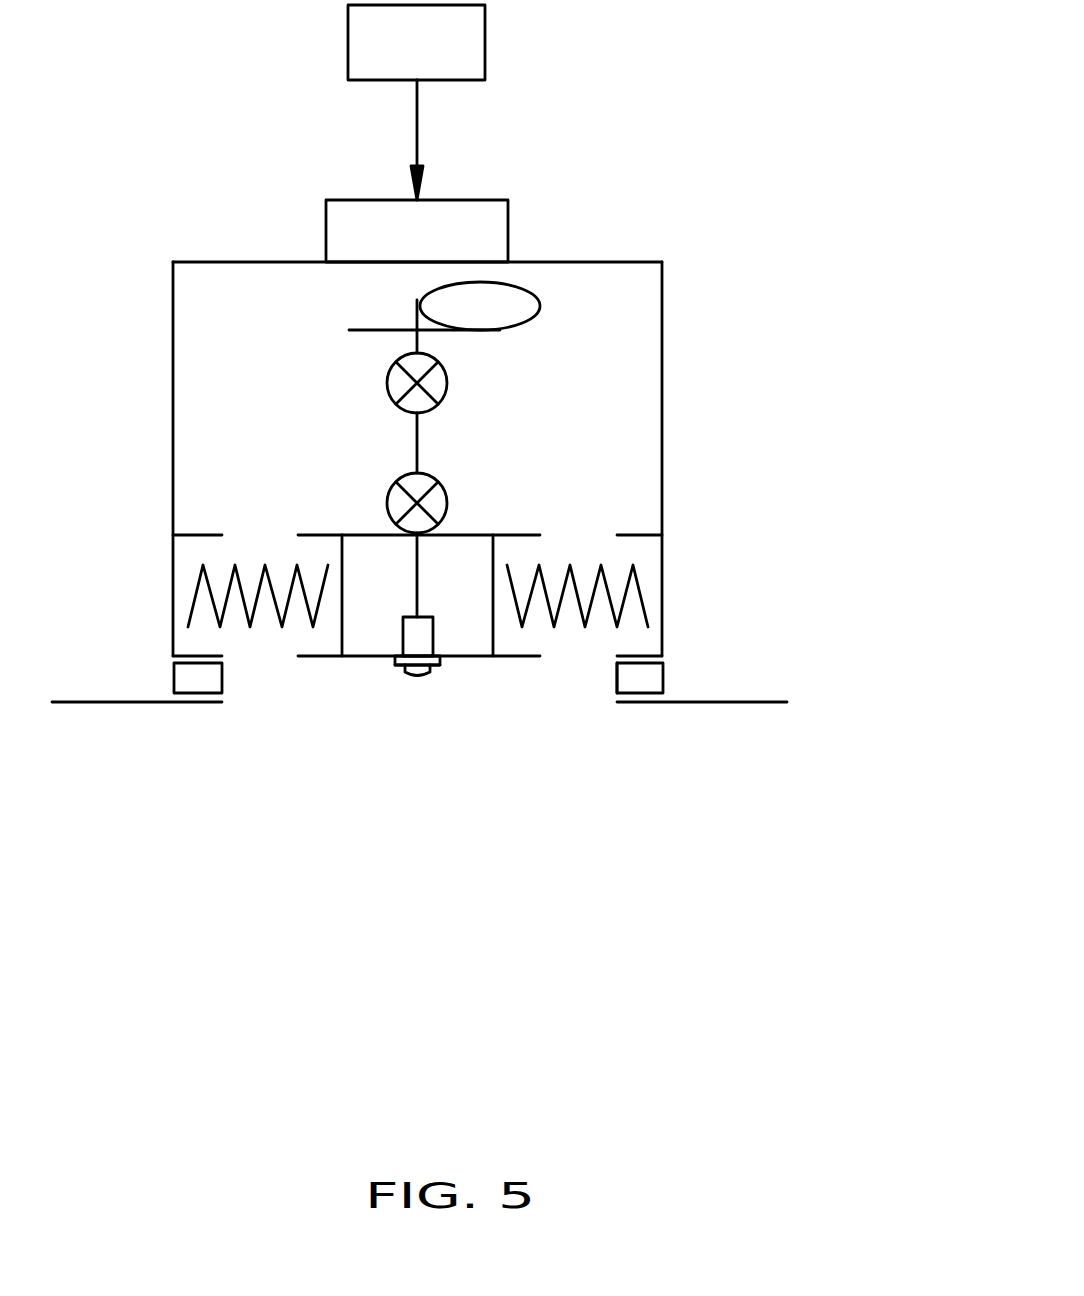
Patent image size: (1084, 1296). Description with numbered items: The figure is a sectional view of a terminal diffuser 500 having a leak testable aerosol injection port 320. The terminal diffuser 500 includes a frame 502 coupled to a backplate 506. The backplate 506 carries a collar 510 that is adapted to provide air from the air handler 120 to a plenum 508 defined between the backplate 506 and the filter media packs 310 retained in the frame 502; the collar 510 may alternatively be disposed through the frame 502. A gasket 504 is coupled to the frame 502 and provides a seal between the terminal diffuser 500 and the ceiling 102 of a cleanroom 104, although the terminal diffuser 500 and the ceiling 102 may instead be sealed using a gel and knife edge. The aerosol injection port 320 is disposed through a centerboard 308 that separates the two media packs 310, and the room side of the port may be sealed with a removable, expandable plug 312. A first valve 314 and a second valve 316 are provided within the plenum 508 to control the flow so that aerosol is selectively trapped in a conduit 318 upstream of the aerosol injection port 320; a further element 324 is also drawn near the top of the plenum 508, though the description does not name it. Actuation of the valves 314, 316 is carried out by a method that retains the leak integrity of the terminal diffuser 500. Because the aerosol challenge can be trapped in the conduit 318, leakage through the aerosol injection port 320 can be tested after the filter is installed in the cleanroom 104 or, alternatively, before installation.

The air handler 120 is at (446, 58).
The collar 510 is at (470, 200).
The terminal diffuser 500 is at (712, 331).
The backplate 506 is at (603, 262).
The frame 502 is at (662, 440).
The plenum 508 is at (647, 313).
The lever loop 324 is at (378, 330).
The second valve 316 is at (447, 388).
The conduit 318 is at (417, 437).
The first valve 314 is at (446, 490).
The plug 312 is at (430, 675).
The centerboard 308 is at (378, 675).
The filter media packs 310 is at (260, 650).
The gasket 504 is at (617, 678).
The aerosol injection port 320 is at (395, 712).
The ceiling 102 is at (743, 702).
The cleanroom 104 is at (832, 923).